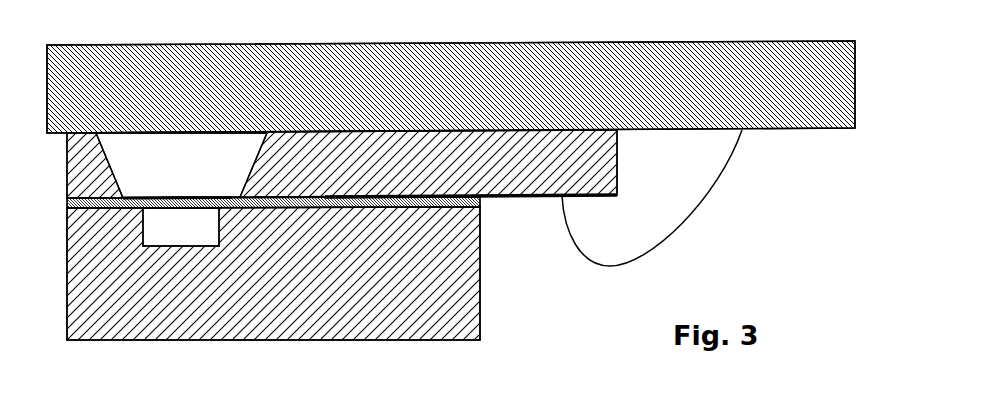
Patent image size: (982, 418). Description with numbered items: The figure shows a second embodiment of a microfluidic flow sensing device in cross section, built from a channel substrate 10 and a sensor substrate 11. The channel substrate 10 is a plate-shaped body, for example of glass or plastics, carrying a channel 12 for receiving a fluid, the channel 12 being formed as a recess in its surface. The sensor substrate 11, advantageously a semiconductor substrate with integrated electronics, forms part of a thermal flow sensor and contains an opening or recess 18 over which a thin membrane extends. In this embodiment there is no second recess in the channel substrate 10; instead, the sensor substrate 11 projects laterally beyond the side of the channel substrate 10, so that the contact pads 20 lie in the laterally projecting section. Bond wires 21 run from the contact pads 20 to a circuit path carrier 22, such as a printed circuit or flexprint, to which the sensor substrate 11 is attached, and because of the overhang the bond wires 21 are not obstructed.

The channel substrate 10 is at (385, 328).
The sensor substrate 11 is at (72, 163).
The channel 12 is at (197, 238).
The recess 18 is at (206, 165).
The contact pads 20 is at (555, 198).
The bond wires 21 is at (717, 173).
The circuit path carrier 22 is at (152, 55).